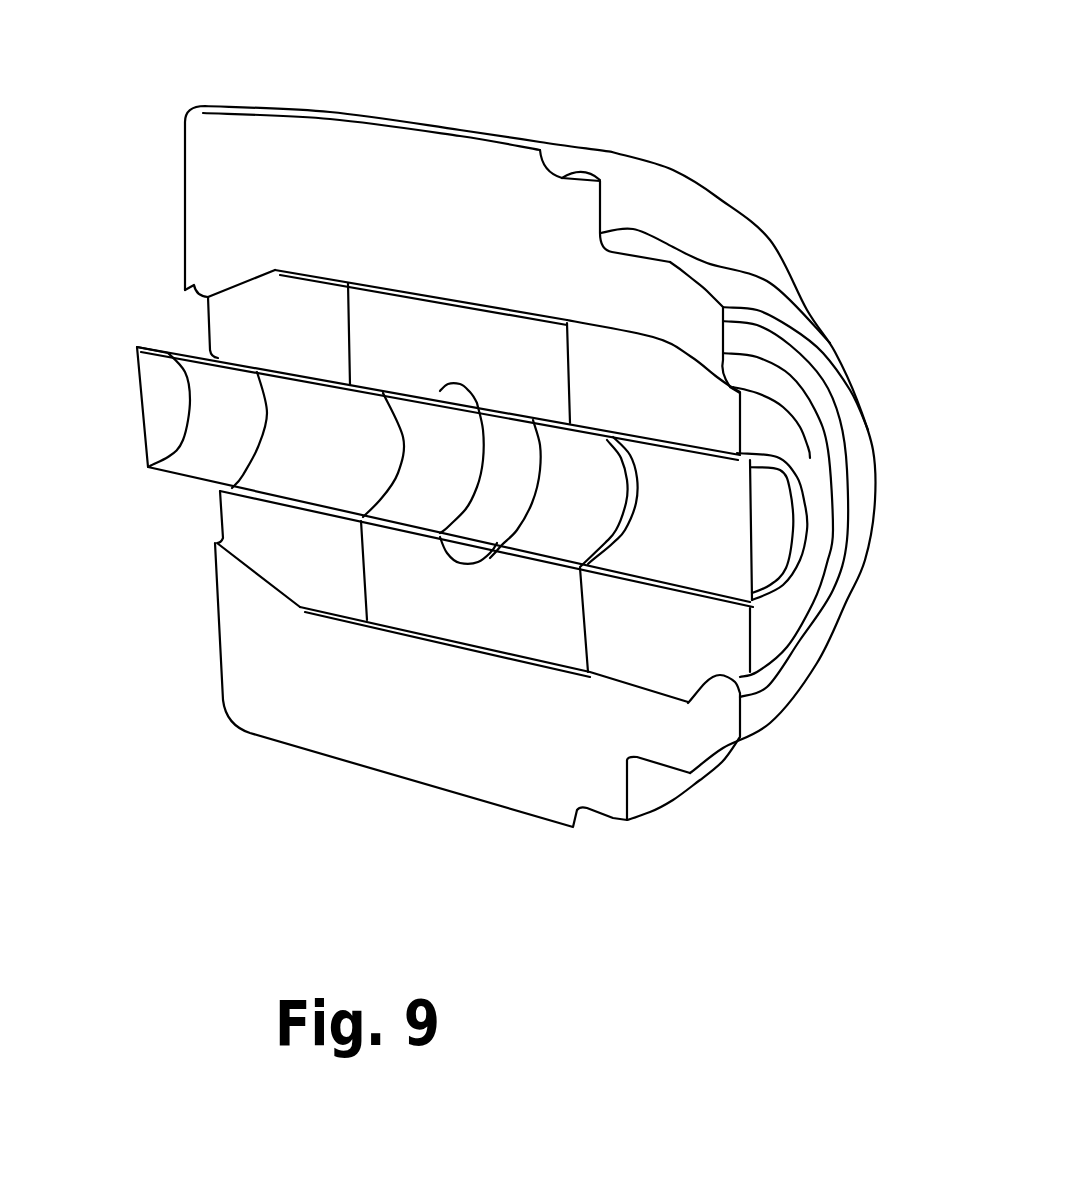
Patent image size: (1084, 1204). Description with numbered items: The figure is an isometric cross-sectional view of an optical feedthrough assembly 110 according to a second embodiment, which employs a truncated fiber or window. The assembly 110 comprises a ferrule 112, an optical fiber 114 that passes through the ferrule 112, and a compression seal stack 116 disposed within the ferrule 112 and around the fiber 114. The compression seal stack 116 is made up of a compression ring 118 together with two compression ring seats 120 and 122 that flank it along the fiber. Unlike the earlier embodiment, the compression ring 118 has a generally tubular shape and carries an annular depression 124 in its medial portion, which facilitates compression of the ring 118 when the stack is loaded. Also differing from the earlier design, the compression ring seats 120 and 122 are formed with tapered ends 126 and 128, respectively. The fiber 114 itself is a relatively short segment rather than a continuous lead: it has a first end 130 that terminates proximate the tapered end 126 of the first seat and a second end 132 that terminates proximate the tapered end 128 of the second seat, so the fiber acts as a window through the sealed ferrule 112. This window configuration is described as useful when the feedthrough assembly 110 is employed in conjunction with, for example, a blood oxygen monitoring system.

The optical feedthrough assembly 110 is at (620, 105).
The ferrule 112 is at (307, 137).
The optical fiber 114 is at (404, 597).
The compression seal stack 116 is at (426, 294).
The compression ring 118 is at (397, 607).
The compression ring seat 120 is at (243, 530).
The compression ring seat 122 is at (687, 643).
The annular depression 124 is at (473, 550).
The tapered end 126 is at (213, 337).
The tapered end 128 is at (769, 509).
The first end 130 is at (157, 425).
The second end 132 is at (773, 530).